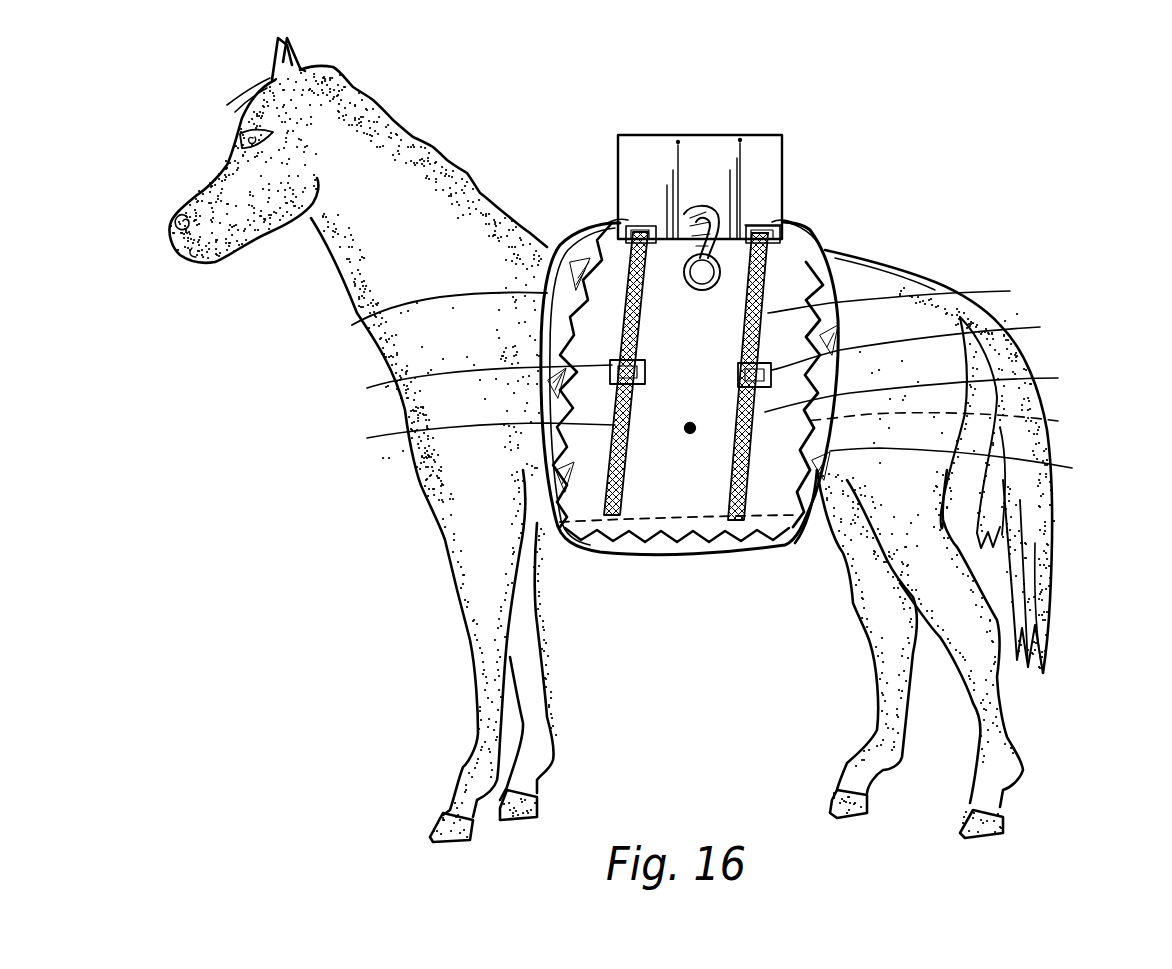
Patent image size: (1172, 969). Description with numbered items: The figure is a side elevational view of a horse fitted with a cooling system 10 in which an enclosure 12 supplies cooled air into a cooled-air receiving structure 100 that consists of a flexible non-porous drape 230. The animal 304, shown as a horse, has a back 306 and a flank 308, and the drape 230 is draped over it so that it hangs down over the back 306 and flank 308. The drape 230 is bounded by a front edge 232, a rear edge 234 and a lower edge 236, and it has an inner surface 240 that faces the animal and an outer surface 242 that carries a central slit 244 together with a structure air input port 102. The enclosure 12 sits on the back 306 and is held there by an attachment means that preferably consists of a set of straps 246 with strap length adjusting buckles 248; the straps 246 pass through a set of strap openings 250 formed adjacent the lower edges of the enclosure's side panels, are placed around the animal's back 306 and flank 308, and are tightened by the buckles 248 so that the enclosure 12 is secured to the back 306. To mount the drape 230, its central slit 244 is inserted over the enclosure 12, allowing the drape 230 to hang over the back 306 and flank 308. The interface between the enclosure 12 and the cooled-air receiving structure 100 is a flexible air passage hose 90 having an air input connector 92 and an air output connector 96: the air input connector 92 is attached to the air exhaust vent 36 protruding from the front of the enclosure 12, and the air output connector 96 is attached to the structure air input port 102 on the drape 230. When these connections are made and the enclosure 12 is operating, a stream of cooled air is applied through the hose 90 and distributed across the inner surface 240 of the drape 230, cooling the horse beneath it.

The pack saddle system 10 is at (742, 158).
The enclosure 12 is at (742, 158).
The air exhaust vent 36 is at (737, 184).
The flexible air passage hose 90 is at (752, 208).
The air input connector 92 is at (690, 212).
The air output connector 96 is at (910, 245).
The cooled-air receiving structure 100 is at (745, 382).
The structure air input port 102 is at (805, 253).
The flexible non-porous drape 230 is at (800, 220).
The front edge 232 is at (352, 325).
The rear edge 234 is at (940, 388).
The lower edge 236 is at (787, 528).
The inner surface 240 is at (1062, 425).
The outer surface 242 is at (982, 467).
The central slit 244 is at (620, 228).
The straps 246 is at (690, 376).
The strap length adjusting buckles 248 is at (707, 360).
The strap openings 250 is at (621, 226).
The animal 304 is at (688, 158).
The back 306 is at (657, 225).
The flank 308 is at (691, 432).